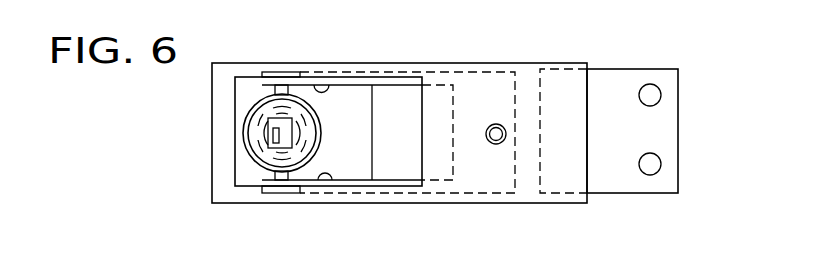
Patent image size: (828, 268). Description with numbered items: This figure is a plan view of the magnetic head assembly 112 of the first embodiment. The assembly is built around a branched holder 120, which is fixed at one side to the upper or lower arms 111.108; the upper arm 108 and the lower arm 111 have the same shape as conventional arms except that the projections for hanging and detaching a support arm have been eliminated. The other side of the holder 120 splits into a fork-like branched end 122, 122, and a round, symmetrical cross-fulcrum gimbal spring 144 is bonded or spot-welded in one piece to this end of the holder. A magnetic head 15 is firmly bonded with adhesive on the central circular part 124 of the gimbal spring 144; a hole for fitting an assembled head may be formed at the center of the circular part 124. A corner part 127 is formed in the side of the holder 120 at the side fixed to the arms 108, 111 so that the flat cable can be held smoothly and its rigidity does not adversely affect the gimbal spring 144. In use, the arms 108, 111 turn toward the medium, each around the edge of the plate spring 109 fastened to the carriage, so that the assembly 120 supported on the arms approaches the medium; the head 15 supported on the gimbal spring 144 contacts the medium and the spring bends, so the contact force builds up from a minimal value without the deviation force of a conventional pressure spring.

The magnetic head 15 is at (266, 131).
The plate spring 109 is at (647, 70).
The lower and upper arms 111.108 is at (580, 109).
The lower arm 111 is at (580, 109).
The upper arm 108 is at (565, 63).
The magnetic head assembly 112 is at (661, 109).
The branched holder 120 is at (477, 73).
The branched end 122 is at (328, 85).
The central circular part 124 is at (263, 116).
The corner part 127 is at (393, 150).
The gimbal spring 144 is at (245, 148).